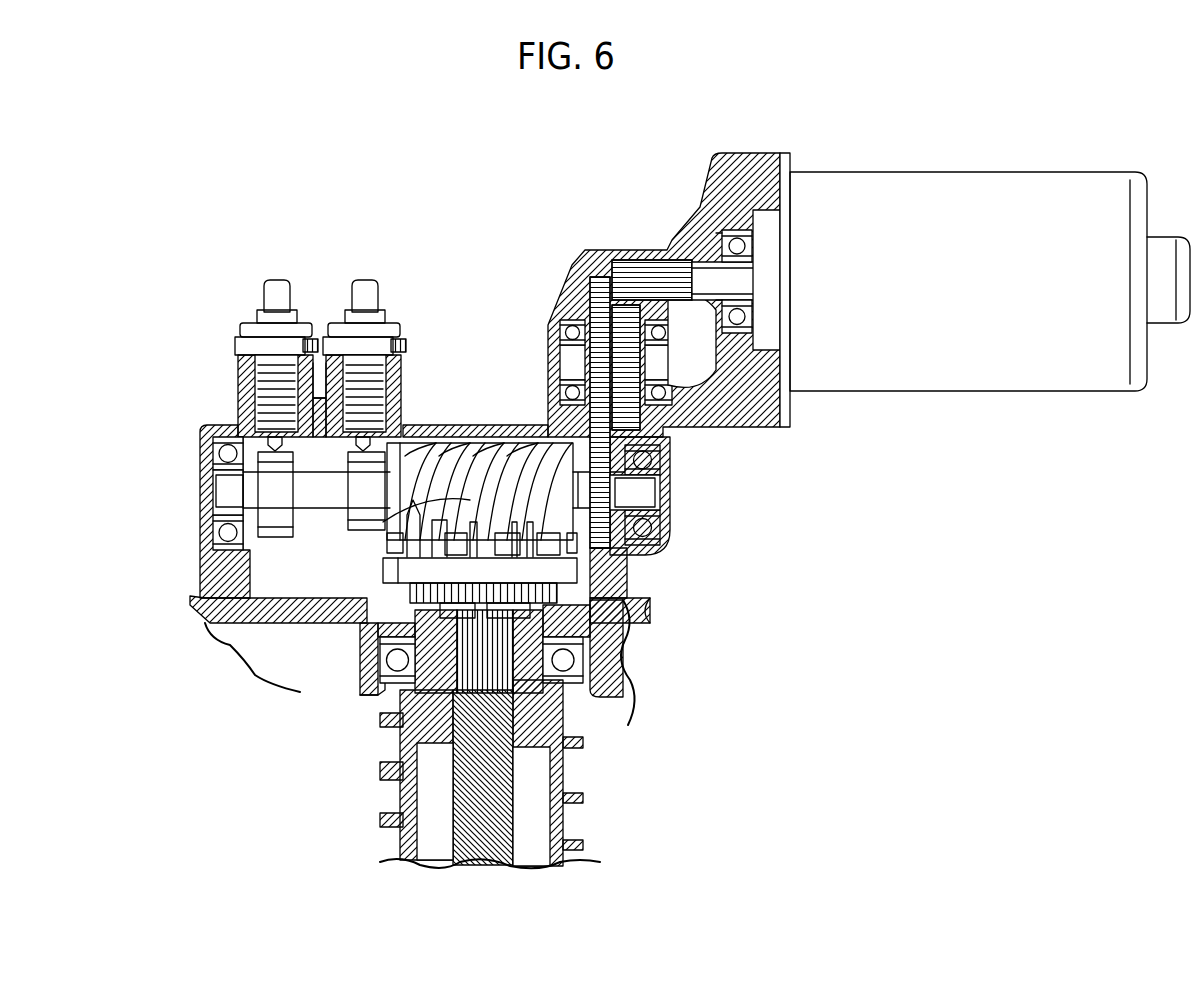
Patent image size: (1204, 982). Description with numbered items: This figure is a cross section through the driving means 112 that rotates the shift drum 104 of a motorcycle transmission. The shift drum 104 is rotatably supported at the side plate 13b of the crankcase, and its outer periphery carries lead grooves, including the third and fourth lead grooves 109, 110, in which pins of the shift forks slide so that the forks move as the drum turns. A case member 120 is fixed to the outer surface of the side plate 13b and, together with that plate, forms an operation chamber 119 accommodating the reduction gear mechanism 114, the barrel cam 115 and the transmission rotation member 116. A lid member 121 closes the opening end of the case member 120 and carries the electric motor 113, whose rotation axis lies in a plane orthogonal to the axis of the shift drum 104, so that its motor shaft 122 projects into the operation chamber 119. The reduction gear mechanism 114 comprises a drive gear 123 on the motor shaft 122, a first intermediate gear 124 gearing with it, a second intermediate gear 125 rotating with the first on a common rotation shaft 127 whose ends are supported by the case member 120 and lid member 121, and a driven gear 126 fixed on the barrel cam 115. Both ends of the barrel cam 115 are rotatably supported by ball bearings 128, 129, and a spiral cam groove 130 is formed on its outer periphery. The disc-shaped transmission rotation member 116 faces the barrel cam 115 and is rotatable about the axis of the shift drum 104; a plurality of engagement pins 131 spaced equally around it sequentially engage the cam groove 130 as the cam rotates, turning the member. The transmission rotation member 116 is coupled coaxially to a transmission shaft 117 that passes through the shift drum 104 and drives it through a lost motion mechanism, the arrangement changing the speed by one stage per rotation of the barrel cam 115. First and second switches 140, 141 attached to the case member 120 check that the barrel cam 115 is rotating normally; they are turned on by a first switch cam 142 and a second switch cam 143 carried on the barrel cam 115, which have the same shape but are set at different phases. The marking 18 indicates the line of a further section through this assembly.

The side plate 13b is at (258, 623).
The section line 18 is at (242, 238).
The shift drum 104 is at (383, 720).
The third lead groove 109 is at (570, 825).
The fourth lead groove 110 is at (398, 753).
The driving means 112 is at (375, 577).
The electric motor 113 is at (985, 294).
The reduction gear mechanism 114 is at (634, 263).
The barrel cam 115 is at (490, 452).
The transmission rotation member 116 is at (607, 583).
The transmission shaft 117 is at (498, 780).
The operation chamber 119 is at (268, 553).
The case member 120 is at (455, 447).
The lid member 121 is at (767, 430).
The motor shaft 122 is at (605, 270).
The drive gear 123 is at (677, 298).
The first intermediate gear 124 is at (690, 430).
The second intermediate gear 125 is at (578, 293).
The driven gear 126 is at (665, 505).
The rotation shaft 127 is at (548, 360).
The ball bearing 128 is at (647, 460).
The ball bearing 129 is at (232, 450).
The cam groove 130 is at (424, 450).
The engagement pins 131 is at (407, 502).
The first switch 140 is at (247, 334).
The second switch 141 is at (400, 336).
The first switch cam 142 is at (268, 492).
The second switch cam 143 is at (358, 475).